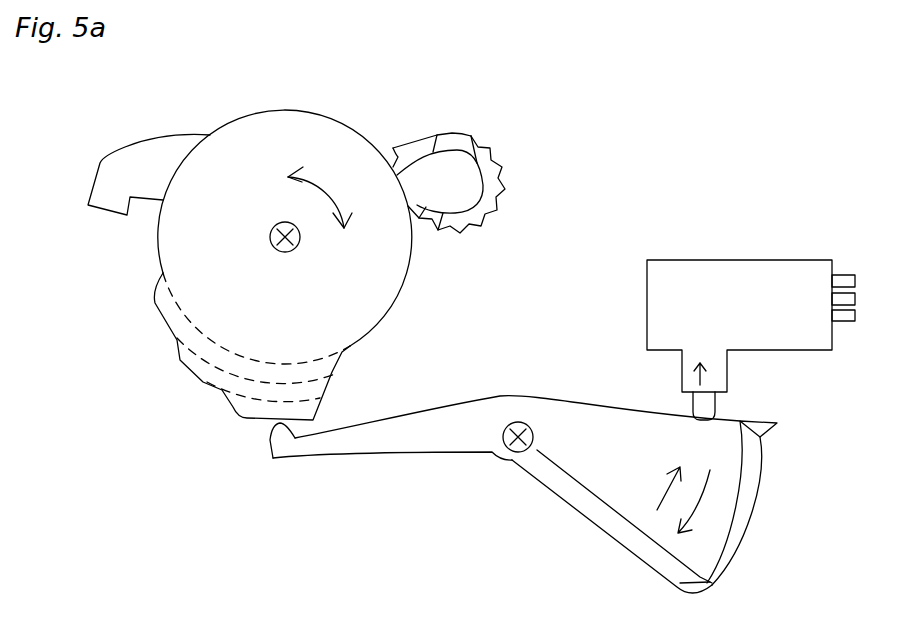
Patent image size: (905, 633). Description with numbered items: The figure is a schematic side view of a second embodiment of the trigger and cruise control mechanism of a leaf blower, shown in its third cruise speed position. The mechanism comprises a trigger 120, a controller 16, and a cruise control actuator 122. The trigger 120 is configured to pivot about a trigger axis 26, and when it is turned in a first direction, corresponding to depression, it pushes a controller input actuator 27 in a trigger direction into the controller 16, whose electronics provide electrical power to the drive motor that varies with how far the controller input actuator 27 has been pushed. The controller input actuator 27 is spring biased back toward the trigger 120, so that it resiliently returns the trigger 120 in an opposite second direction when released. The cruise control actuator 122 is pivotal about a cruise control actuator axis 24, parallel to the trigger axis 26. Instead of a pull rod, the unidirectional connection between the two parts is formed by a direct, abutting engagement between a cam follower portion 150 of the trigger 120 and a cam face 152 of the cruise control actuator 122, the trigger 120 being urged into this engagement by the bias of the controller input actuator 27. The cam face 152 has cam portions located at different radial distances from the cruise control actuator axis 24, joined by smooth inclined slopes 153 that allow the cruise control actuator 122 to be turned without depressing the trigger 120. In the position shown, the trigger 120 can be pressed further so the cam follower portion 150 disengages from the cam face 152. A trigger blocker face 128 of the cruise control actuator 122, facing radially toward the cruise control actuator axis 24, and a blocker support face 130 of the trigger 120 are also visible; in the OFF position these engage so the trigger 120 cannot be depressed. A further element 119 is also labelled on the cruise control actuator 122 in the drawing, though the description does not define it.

The cruise control actuator 122 is at (442, 72).
The cruise control actuator axis 24 is at (270, 238).
The ratchet wheel 119 is at (157, 210).
The trigger blocker face 128 is at (133, 203).
The inclined slopes 153 is at (177, 350).
The cam face 152 is at (203, 383).
The cam follower portion 150 is at (280, 427).
The blocker support face 130 is at (287, 458).
The trigger axis 26 is at (527, 418).
The trigger 120 is at (620, 487).
The controller 16 is at (737, 288).
The controller input actuator 27 is at (720, 400).